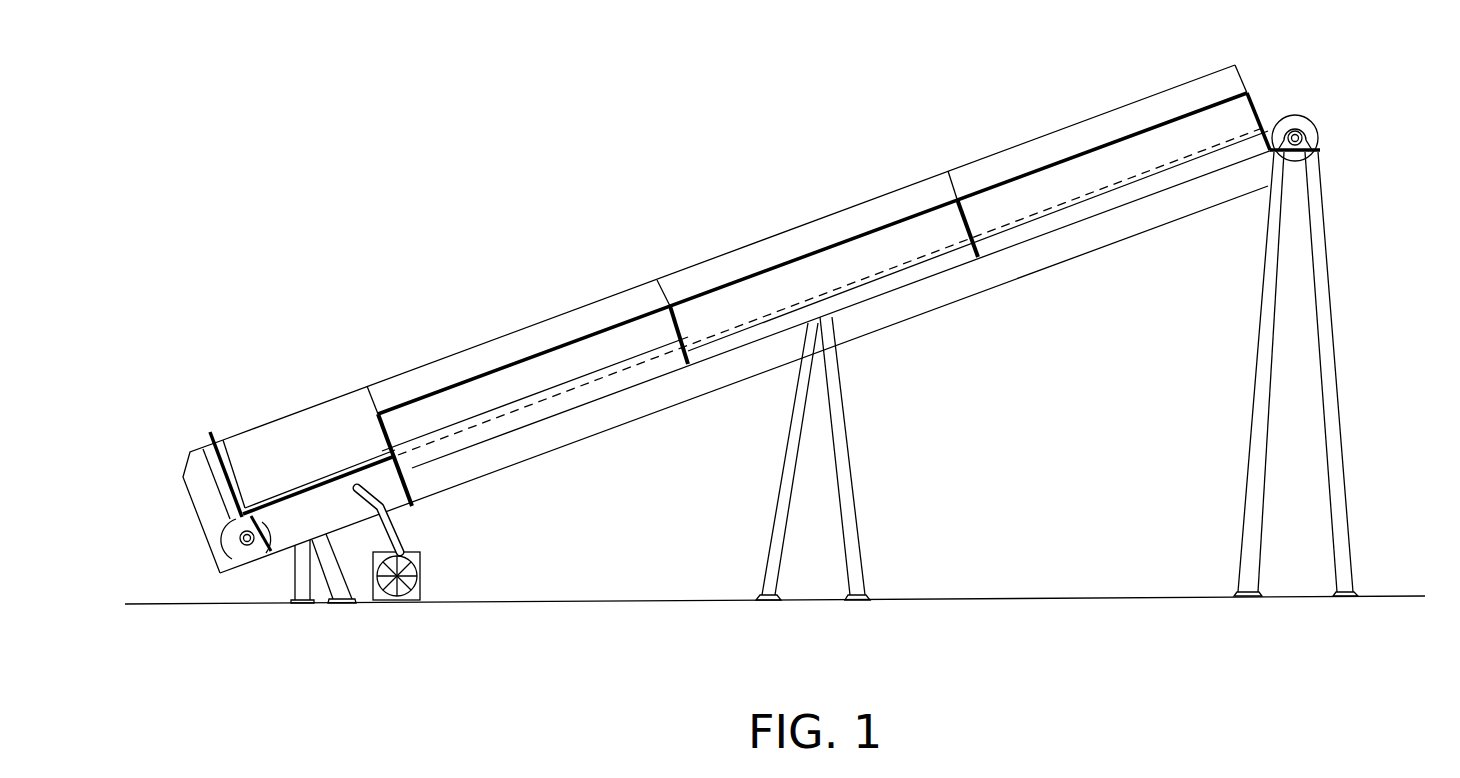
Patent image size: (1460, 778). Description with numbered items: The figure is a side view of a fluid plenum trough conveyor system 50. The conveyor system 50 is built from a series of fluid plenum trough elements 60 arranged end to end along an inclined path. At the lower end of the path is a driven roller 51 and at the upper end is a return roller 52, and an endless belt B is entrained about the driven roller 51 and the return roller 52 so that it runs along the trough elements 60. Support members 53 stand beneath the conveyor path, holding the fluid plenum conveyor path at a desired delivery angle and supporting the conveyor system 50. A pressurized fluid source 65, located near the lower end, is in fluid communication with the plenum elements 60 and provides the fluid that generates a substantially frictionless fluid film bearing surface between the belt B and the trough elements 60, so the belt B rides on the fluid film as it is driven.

The conveyor system 50 is at (630, 228).
The driven roller 51 is at (233, 550).
The return roller 52 is at (1308, 127).
The support members 53 is at (303, 586).
The fluid plenum trough elements 60 is at (1046, 228).
The pressurized fluid source 65 is at (433, 592).
The endless belt B is at (1156, 229).